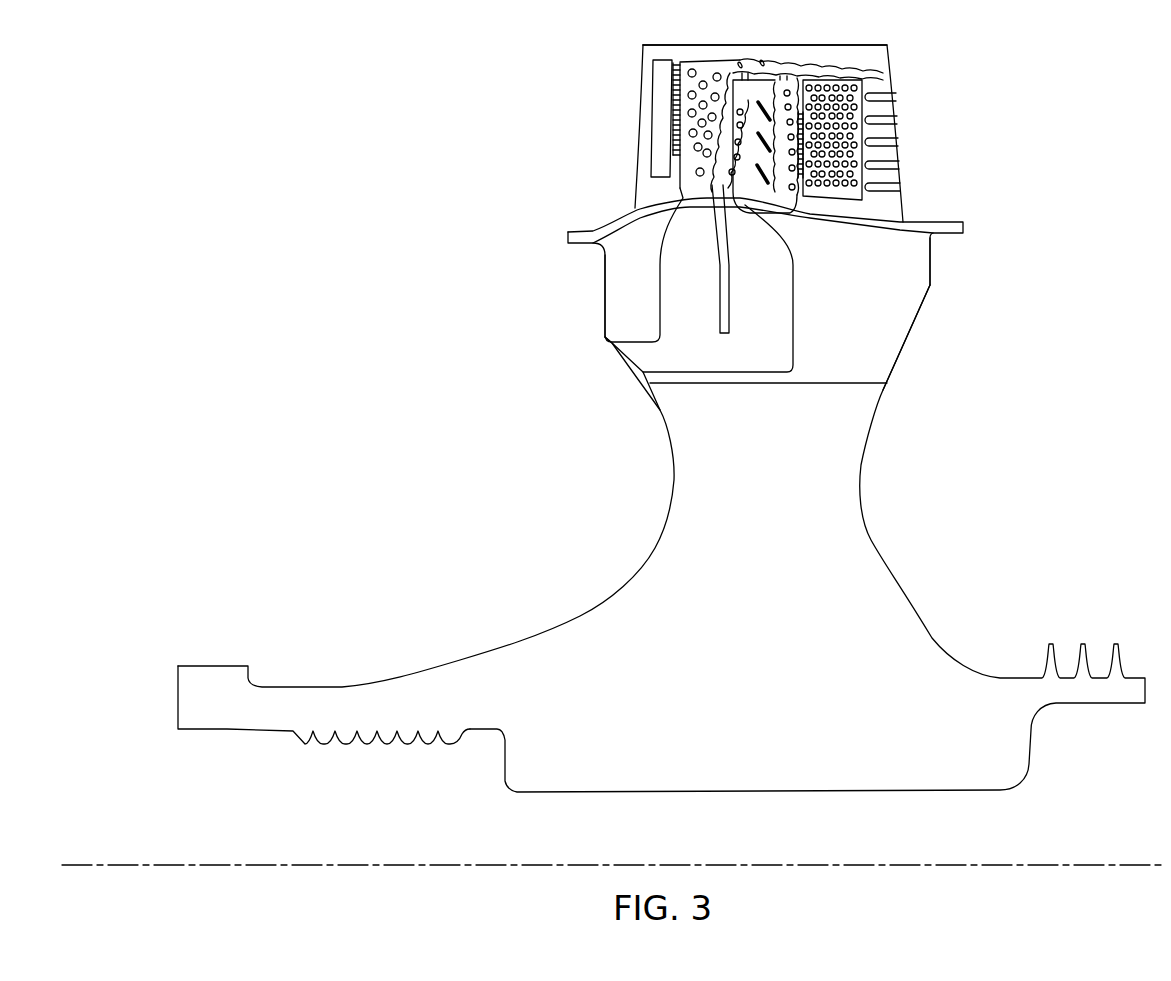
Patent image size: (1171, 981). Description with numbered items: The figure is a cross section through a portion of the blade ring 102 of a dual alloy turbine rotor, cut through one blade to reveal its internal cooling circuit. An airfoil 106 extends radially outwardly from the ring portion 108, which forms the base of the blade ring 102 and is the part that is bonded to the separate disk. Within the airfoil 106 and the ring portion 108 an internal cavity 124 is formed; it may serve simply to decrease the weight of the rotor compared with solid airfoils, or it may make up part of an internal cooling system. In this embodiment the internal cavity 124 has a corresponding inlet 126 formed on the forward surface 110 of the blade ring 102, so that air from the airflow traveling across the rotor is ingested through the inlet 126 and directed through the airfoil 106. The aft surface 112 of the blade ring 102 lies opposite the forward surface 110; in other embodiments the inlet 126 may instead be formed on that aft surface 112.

The blade ring 102 is at (903, 255).
The airfoil 106 is at (660, 48).
The ring portion 108 is at (618, 268).
The forward surface 110 is at (605, 300).
The aft surface 112 is at (910, 323).
The internal cavity 124 is at (690, 190).
The inlet 126 is at (618, 362).